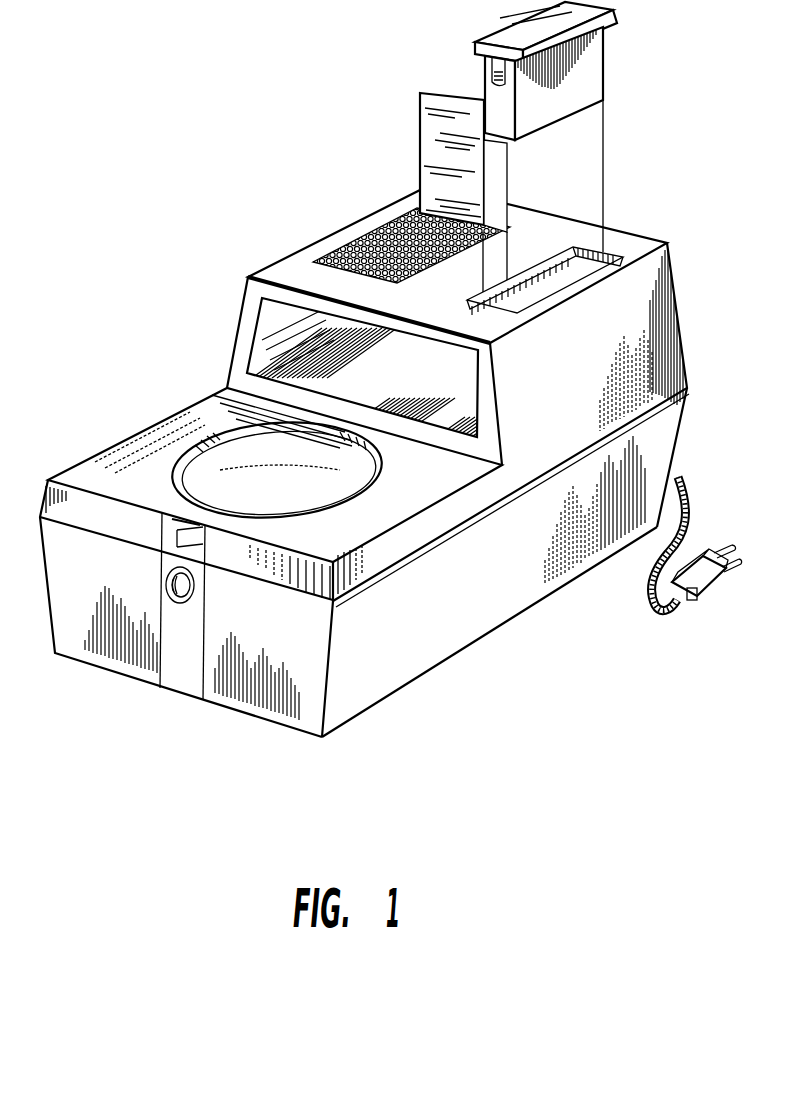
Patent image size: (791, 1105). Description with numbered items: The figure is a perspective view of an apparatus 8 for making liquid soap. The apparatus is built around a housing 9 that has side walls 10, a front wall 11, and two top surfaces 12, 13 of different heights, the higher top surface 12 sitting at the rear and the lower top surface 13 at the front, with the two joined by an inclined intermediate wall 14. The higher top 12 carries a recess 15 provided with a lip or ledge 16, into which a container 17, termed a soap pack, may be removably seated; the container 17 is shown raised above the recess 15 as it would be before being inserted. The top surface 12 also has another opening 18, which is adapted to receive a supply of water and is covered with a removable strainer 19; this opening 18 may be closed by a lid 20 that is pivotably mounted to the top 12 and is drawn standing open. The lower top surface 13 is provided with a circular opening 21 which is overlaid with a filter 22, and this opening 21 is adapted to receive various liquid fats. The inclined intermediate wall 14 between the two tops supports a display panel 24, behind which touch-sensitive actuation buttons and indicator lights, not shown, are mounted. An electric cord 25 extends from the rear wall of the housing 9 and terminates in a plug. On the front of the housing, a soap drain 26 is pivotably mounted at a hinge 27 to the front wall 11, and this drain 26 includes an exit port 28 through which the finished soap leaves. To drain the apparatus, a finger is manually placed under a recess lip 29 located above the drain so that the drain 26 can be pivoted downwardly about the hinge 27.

The apparatus 8 is at (190, 298).
The housing 9 is at (490, 607).
The side walls 10 is at (453, 645).
The front wall 11 is at (268, 703).
The top surface 12 is at (634, 241).
The lower top surface 13 is at (101, 462).
The inclined intermediate wall 14 is at (240, 332).
The recess 15 is at (552, 283).
The lip or ledge 16 is at (518, 283).
The container 17 is at (607, 58).
The opening 18 is at (362, 235).
The removable strainer 19 is at (387, 229).
The lid 20 is at (420, 132).
The circular opening 21 is at (233, 436).
The filter 22 is at (279, 473).
The display panel 24 is at (401, 342).
The electric cord 25 is at (653, 602).
The soap drain 26 is at (173, 672).
The hinge 27 is at (188, 692).
The exit port 28 is at (166, 588).
The recess lip 29 is at (175, 531).